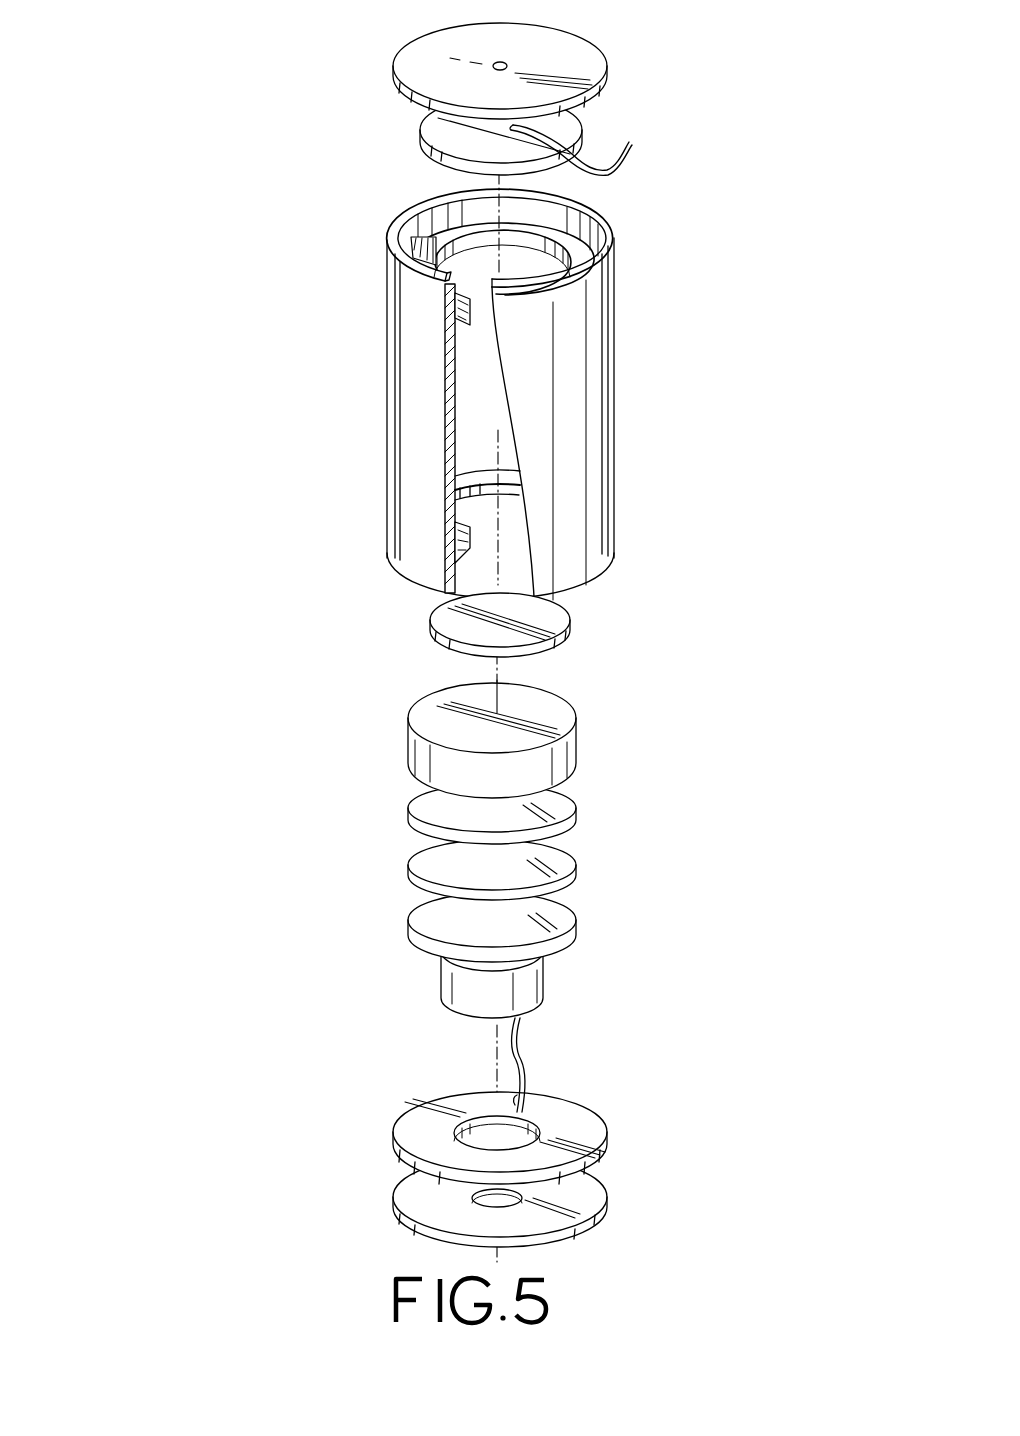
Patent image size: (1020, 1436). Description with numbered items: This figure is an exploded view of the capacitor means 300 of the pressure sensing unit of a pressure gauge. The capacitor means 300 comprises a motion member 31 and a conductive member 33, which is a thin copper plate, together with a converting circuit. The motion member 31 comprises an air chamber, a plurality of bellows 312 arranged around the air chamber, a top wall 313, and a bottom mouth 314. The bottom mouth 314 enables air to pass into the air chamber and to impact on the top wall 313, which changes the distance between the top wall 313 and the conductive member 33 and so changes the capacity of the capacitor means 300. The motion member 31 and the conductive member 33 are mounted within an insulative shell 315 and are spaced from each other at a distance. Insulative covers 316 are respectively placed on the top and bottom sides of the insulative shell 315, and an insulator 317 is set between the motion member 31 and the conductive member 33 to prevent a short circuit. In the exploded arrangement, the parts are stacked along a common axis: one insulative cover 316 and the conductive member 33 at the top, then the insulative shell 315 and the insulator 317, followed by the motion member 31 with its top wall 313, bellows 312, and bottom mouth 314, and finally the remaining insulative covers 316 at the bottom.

The capacitor means 300 is at (343, 435).
The insulative covers 316 is at (572, 52).
The conductive member 33 is at (572, 128).
The insulative shell 315 is at (607, 305).
The insulator 317 is at (558, 623).
The top wall 313 is at (560, 712).
The motion member 31 is at (558, 803).
The bellows 312 is at (560, 880).
The bottom mouth 314 is at (545, 1010).